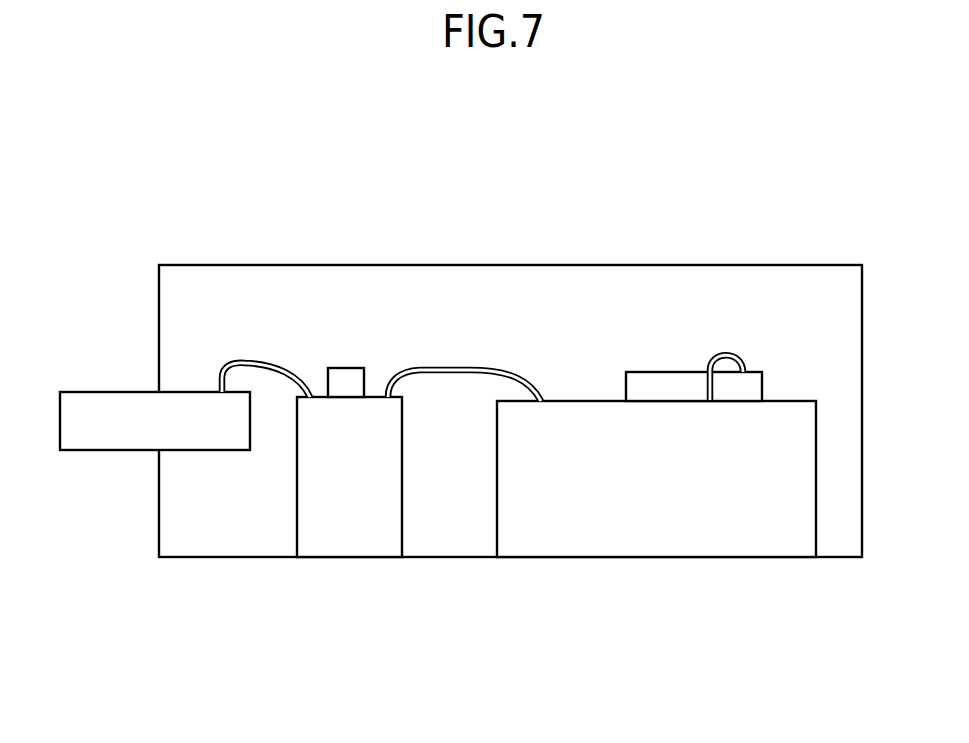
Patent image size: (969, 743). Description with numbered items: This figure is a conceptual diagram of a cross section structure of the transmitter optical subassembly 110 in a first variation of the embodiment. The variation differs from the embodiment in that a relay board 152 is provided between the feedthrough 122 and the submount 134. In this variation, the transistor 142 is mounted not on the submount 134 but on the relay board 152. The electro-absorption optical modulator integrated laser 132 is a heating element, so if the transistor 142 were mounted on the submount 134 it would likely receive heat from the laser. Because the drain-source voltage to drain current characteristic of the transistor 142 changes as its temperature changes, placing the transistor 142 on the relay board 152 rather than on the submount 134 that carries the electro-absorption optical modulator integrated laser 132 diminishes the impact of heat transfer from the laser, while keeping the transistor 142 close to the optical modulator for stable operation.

The transmitter optical subassembly 110 is at (558, 235).
The feedthrough 122 is at (219, 432).
The electro-absorption optical modulator integrated laser 132 is at (668, 371).
The submount 134 is at (669, 548).
The transistor 142 is at (339, 367).
The relay board 152 is at (356, 548).